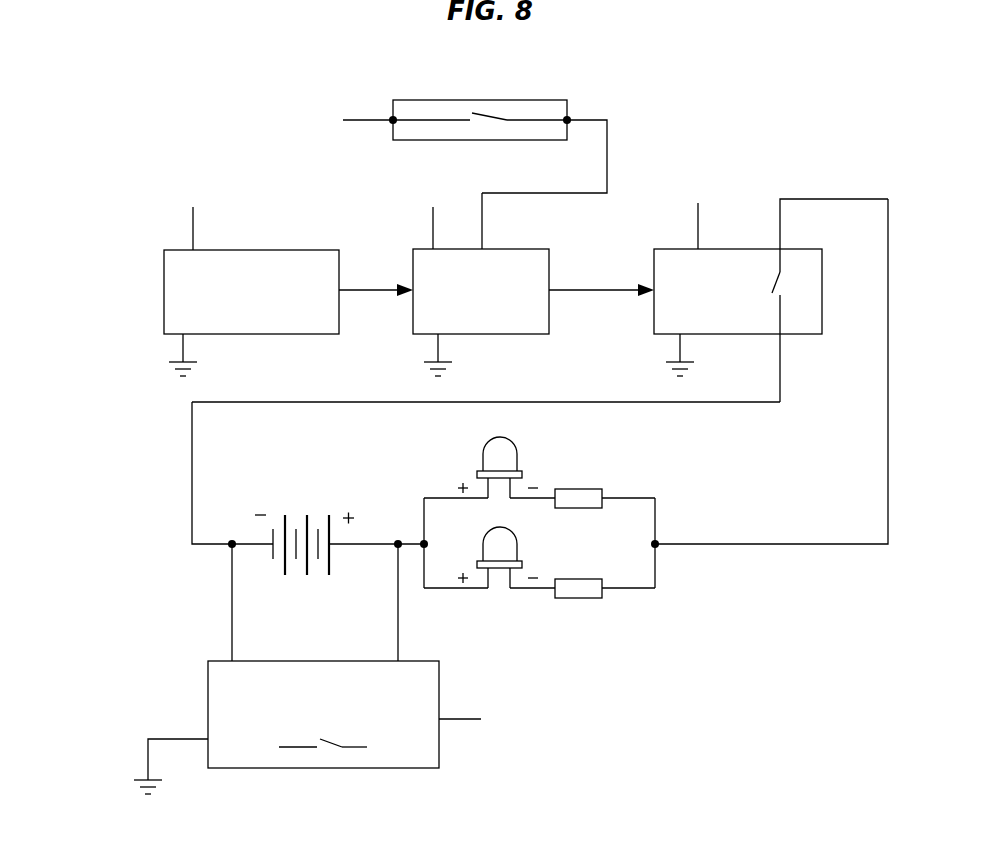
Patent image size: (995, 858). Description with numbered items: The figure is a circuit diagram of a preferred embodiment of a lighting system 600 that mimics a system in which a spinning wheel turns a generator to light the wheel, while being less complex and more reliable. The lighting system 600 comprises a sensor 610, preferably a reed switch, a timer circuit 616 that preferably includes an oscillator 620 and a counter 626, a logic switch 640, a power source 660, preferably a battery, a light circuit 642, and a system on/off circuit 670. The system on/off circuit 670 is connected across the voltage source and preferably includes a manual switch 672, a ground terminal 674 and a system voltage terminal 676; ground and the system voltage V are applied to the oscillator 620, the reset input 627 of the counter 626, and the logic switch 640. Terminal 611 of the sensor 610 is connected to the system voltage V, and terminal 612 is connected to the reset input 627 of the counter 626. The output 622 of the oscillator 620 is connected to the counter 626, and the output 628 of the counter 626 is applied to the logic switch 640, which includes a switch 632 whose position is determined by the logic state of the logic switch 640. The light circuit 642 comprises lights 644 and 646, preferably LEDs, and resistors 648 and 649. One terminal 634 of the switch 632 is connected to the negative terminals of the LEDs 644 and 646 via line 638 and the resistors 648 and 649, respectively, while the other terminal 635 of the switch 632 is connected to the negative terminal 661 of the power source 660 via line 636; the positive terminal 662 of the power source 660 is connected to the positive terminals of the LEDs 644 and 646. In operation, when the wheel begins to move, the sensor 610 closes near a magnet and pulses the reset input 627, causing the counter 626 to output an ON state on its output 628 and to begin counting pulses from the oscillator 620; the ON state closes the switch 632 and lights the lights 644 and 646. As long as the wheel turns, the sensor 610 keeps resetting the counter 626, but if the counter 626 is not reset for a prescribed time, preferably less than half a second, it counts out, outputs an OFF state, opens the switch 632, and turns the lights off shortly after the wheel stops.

The lighting system 600 is at (772, 64).
The sensor 610 is at (544, 100).
The terminal of sensor 611 is at (370, 120).
The terminal of sensor 612 is at (607, 118).
The timer circuit 616 is at (116, 270).
The oscillator 620 is at (302, 250).
The output of oscillator 622 is at (383, 290).
The counter 626 is at (532, 249).
The reset input 627 is at (499, 192).
The output of counter 628 is at (590, 291).
The switch 632 is at (783, 270).
The terminal of switch 634 is at (783, 221).
The terminal of switch 635 is at (783, 363).
The line 636 is at (745, 402).
The line 638 is at (778, 546).
The logic switch 640 is at (748, 249).
The light circuit 642 is at (581, 660).
The light 644 is at (522, 450).
The light 646 is at (521, 548).
The resistor 648 is at (596, 489).
The resistor 649 is at (597, 598).
The power source 660 is at (332, 568).
The negative terminal 661 is at (198, 547).
The positive terminal 662 is at (380, 544).
The system on/off circuit 670 is at (358, 768).
The manual switch 672 is at (295, 748).
The ground terminal 674 is at (177, 739).
The system voltage terminal 676 is at (458, 719).